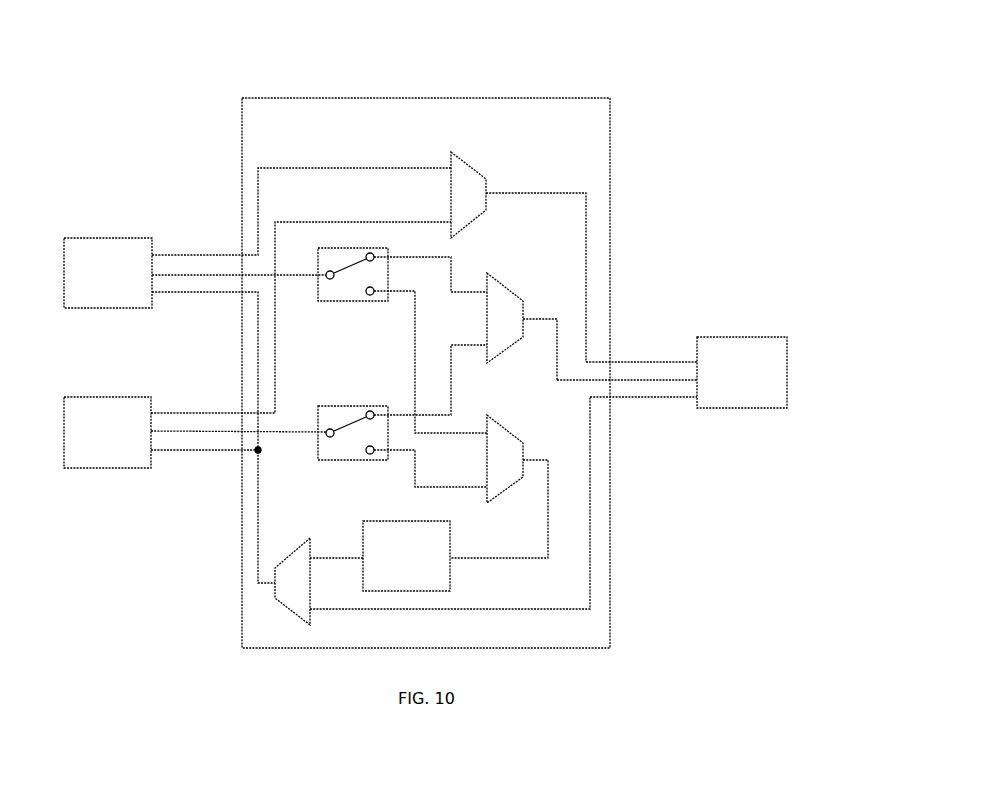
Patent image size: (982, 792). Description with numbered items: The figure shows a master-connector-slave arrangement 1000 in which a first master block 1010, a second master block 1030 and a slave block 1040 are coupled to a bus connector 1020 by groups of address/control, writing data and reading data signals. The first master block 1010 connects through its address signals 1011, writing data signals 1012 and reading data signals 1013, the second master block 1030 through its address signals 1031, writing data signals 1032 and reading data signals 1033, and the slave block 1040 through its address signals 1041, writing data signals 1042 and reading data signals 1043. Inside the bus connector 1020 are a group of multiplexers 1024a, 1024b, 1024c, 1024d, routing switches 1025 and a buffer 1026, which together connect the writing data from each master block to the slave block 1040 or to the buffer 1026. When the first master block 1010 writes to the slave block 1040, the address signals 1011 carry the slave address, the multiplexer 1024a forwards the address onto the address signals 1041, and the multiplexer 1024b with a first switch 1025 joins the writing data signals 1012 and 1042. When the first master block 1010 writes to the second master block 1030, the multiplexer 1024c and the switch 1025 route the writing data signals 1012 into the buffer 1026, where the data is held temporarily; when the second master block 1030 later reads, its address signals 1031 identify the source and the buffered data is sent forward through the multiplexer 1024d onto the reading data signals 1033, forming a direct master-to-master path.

The master-connector-slave arrangement 1000 is at (776, 49).
The first master block 1010 is at (117, 237).
The address signals 1011 is at (213, 258).
The writing data signals 1012 is at (213, 277).
The reading data signals 1013 is at (213, 295).
The bus connector 1020 is at (461, 97).
The multiplexer 1024a is at (467, 165).
The multiplexer 1024b is at (498, 288).
The multiplexer 1024c is at (498, 429).
The multiplexer 1024d is at (298, 550).
The routing switches 1025 is at (357, 303).
The buffer 1026 is at (372, 521).
The second master block 1030 is at (117, 396).
The address signals 1031 is at (213, 416).
The writing data signals 1032 is at (213, 434).
The reading data signals 1033 is at (213, 452).
The slave block 1040 is at (744, 336).
The address signals 1041 is at (667, 365).
The writing data signals 1042 is at (668, 383).
The reading data signals 1043 is at (668, 400).